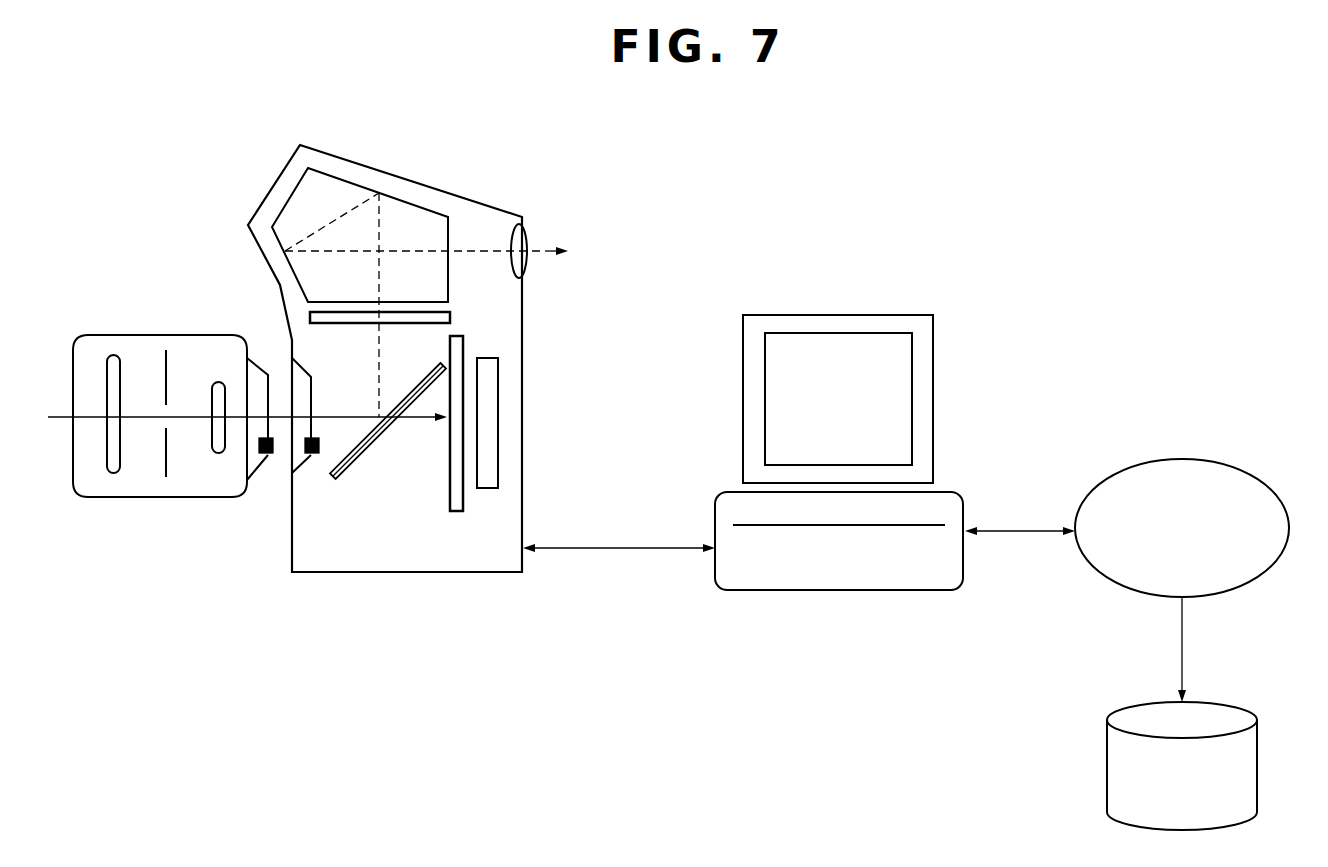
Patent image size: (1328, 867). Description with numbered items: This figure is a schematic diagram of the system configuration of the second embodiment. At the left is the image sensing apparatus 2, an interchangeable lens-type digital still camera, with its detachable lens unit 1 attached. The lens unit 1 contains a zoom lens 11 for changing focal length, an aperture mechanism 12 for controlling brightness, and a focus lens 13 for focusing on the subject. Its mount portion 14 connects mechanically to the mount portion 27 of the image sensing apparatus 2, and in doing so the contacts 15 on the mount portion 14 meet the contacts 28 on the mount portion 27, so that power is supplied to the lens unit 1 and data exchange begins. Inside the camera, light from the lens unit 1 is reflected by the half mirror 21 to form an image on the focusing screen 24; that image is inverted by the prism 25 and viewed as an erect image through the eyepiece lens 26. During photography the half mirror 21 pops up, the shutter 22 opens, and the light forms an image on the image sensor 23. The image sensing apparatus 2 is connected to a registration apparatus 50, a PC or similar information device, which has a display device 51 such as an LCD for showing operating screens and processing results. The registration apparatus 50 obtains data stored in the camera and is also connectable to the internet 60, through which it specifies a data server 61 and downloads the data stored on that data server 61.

The lens unit 1 is at (122, 335).
The zoom lens 11 is at (112, 473).
The aperture mechanism 12 is at (166, 477).
The focus lens 13 is at (222, 453).
The mount portion 14 is at (267, 362).
The contacts 15 is at (268, 455).
The image sensing apparatus 2 is at (277, 181).
The half mirror 21 is at (350, 470).
The shutter 22 is at (452, 495).
The image sensor 23 is at (490, 488).
The focusing screen 24 is at (452, 317).
The prism 25 is at (450, 273).
The eyepiece lens 26 is at (527, 237).
The mount portion 27 is at (312, 367).
The contacts 28 is at (313, 455).
The registration apparatus 50 is at (938, 490).
The display device 51 is at (845, 314).
The internet 60 is at (1185, 458).
The data server 61 is at (1257, 745).